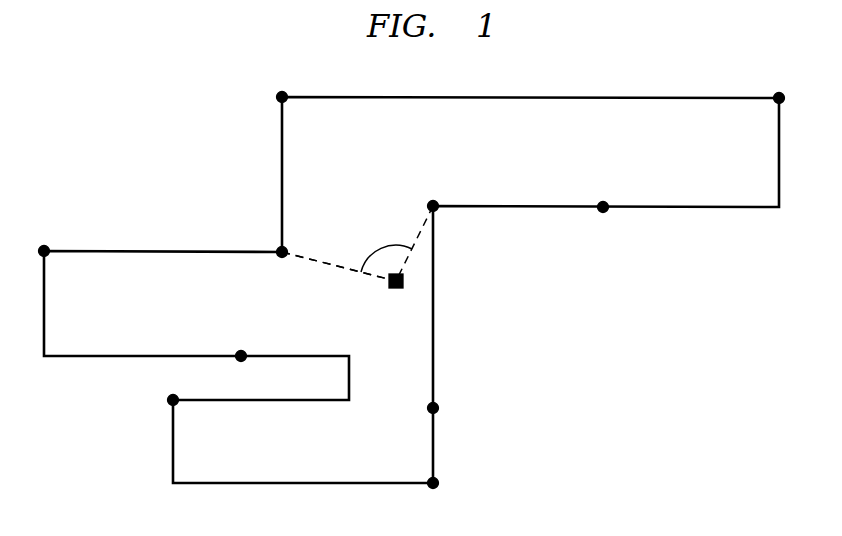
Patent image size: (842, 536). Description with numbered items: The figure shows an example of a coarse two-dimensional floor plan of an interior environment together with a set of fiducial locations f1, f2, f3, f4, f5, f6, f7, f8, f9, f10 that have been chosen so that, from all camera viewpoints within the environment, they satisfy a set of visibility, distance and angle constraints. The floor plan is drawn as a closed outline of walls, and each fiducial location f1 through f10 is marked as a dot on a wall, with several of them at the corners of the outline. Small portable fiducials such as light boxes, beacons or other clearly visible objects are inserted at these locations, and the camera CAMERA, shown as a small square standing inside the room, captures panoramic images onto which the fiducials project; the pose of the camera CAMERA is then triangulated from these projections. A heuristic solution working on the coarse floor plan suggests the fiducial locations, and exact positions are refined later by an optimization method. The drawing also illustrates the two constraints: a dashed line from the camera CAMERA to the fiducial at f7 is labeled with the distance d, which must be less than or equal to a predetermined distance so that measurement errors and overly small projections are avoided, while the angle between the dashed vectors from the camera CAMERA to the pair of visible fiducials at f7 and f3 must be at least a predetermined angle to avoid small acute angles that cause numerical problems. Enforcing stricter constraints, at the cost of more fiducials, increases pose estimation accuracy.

The fiducial location f1 is at (445, 484).
The fiducial location f2 is at (445, 409).
The fiducial location f3 is at (444, 226).
The fiducial location f4 is at (613, 225).
The fiducial location f5 is at (790, 95).
The fiducial location f6 is at (272, 98).
The fiducial location f7 is at (272, 238).
The fiducial location f8 is at (54, 268).
The fiducial location f9 is at (249, 341).
The fiducial location f10 is at (189, 418).
The distance d is at (339, 271).
The camera CAMERA is at (386, 296).